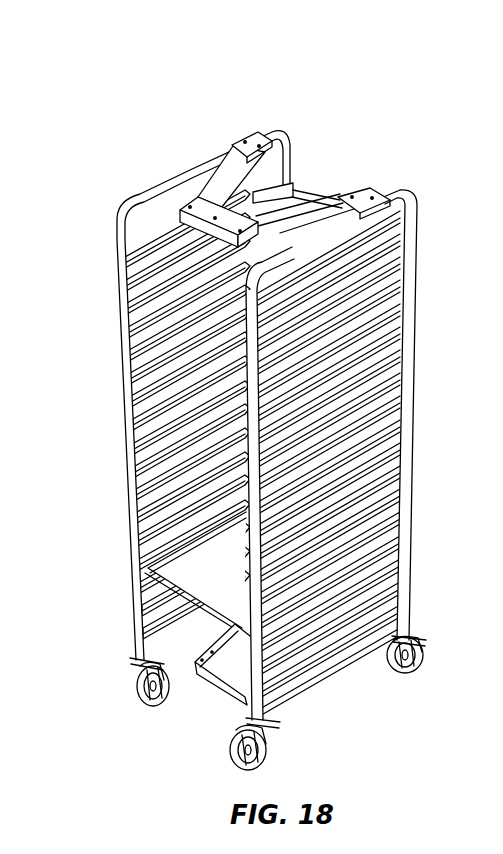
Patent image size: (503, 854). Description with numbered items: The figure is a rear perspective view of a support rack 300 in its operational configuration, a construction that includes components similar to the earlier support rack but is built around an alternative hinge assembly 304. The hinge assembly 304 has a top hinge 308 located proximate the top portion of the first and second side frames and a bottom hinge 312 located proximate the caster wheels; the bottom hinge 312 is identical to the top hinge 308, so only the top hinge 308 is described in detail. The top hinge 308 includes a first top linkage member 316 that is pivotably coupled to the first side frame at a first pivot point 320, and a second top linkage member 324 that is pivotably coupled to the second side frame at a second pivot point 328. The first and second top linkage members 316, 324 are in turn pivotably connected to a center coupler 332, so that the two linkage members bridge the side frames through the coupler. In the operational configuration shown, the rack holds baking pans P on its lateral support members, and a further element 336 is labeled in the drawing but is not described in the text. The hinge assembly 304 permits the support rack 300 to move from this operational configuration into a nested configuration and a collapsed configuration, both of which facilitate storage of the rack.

The support rack 300 is at (386, 122).
The hinge assembly 304 is at (95, 222).
The top hinge 308 is at (251, 194).
The bottom hinge 312 is at (204, 698).
The first top linkage member 316 is at (228, 188).
The first pivot point 320 is at (243, 144).
The second top linkage member 324 is at (347, 232).
The second pivot point 328 is at (372, 190).
The center coupler 332 is at (197, 236).
The second shelf section 336 is at (380, 464).
The baking pans P is at (150, 571).